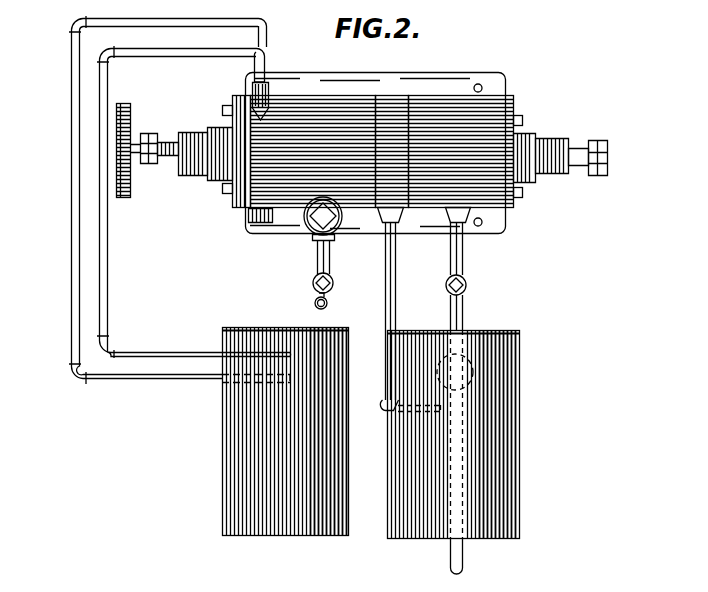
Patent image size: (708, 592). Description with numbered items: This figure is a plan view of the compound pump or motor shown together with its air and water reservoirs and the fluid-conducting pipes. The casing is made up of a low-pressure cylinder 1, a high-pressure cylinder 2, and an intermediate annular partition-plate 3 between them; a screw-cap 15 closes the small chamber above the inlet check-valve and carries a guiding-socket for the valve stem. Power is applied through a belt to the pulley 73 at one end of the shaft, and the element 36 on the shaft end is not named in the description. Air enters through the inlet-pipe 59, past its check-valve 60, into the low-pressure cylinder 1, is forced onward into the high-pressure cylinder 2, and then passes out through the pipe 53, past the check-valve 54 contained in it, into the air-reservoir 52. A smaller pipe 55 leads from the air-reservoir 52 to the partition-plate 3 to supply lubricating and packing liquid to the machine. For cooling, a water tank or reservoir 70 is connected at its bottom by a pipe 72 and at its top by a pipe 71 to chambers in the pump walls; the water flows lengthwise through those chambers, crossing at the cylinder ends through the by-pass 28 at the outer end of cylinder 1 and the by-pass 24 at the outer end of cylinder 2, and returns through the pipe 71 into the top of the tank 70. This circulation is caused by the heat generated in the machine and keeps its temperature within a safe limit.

The low-pressure cylinder 1 is at (373, 151).
The high-pressure cylinder 2 is at (461, 152).
The intermediate annular partition-plate 3 is at (392, 152).
The screw-cap 15 is at (336, 228).
The by-pass 24 is at (478, 140).
The by-pass 28 is at (240, 216).
The shaft 36 is at (181, 149).
The air-reservoir 52 is at (453, 434).
The pipe 53 is at (462, 318).
The check-valve 54 is at (465, 279).
The smaller pipe 55 is at (428, 242).
The inlet-pipe 59 is at (317, 256).
The check-valve 60 is at (313, 283).
The water tank or reservoir 70 is at (285, 431).
The pipe 71 is at (104, 282).
The pipe 72 is at (72, 228).
The pulley 73 is at (128, 192).